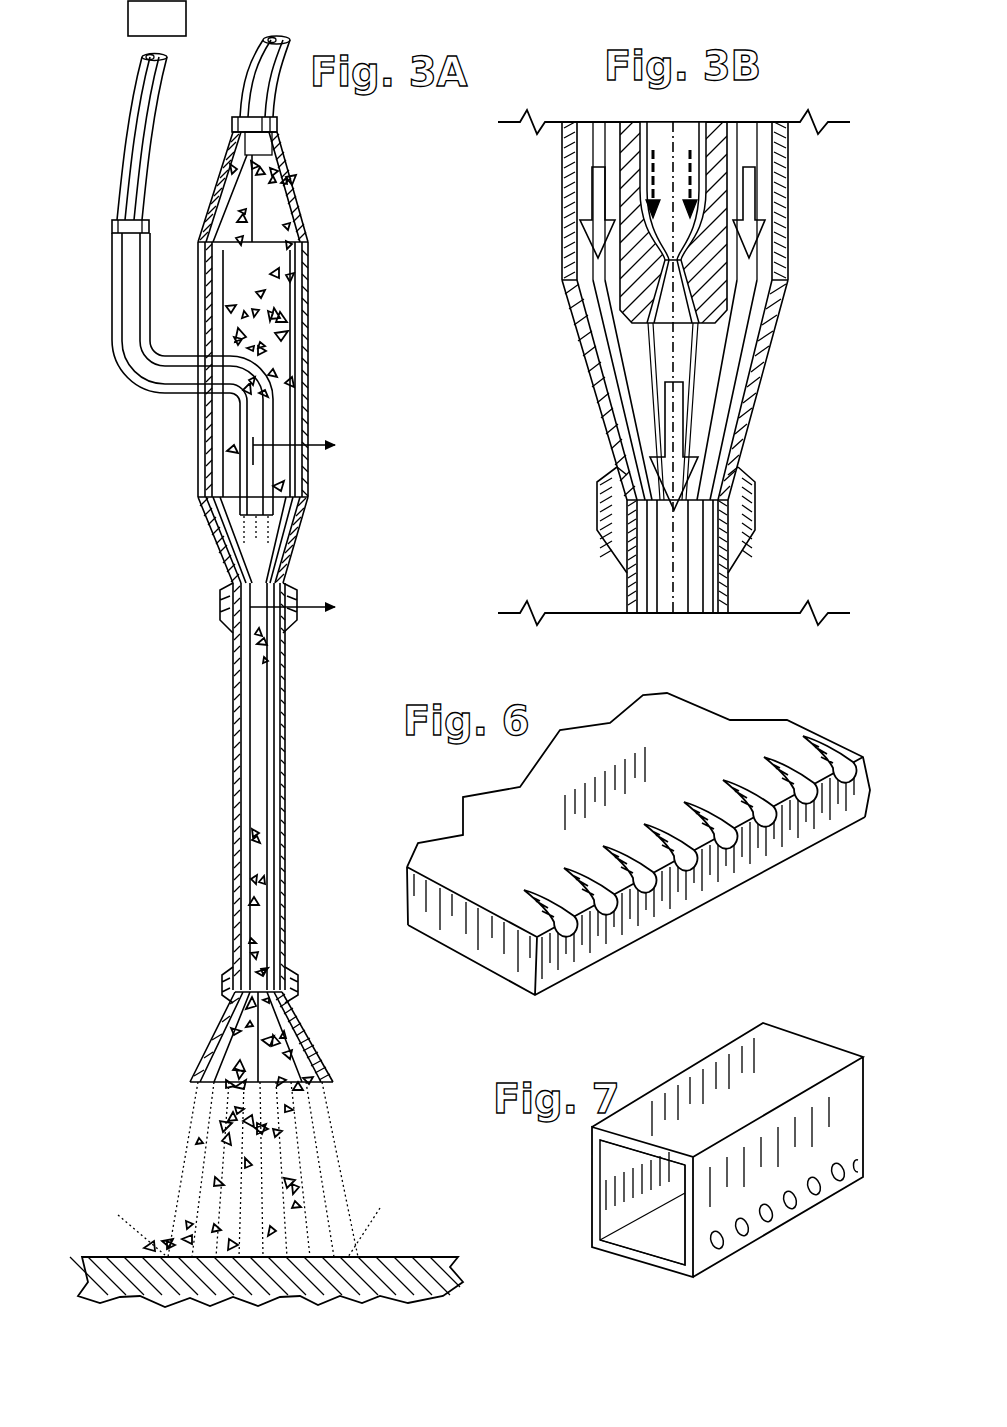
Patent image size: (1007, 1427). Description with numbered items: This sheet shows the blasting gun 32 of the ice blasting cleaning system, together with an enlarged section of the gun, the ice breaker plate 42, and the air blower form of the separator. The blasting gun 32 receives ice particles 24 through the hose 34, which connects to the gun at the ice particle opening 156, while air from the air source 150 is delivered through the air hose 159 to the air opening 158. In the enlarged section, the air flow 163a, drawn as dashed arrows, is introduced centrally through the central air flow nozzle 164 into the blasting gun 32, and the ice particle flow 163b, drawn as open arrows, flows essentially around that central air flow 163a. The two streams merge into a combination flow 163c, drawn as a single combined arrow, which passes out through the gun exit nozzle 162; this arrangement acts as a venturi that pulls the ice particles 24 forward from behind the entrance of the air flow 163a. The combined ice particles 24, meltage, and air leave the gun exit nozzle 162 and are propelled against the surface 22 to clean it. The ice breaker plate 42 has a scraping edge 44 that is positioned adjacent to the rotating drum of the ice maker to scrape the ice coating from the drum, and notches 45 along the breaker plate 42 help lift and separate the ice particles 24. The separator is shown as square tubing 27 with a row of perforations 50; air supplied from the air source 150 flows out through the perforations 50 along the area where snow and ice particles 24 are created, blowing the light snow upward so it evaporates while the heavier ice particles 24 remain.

In FIG. 3A, the air source 150 is at (155, 52).
In FIG. 3A, the hose 34 is at (244, 103).
In FIG. 3A, the air hose 159 is at (122, 165).
In FIG. 3A, the air opening 158 is at (110, 226).
In FIG. 3A, the ice particle opening 156 is at (284, 108).
In FIG. 3A, the blasting gun 32 is at (205, 851).
In FIG. 3B, the blasting gun 32 is at (800, 328).
In FIG. 3A, the gun exit nozzle 162 is at (325, 1050).
In FIG. 3A, the ice particles 24 is at (345, 1207).
In FIG. 3A, the surface 22 is at (445, 1268).
In FIG. 3B, the air flow 163a is at (648, 170).
In FIG. 3B, the ice particle flow 163b is at (757, 210).
In FIG. 3B, the combination flow 163c is at (690, 440).
In FIG. 3B, the central air flow nozzle 164 is at (655, 330).
In FIG. 6, the ice breaker plate 42 is at (712, 768).
In FIG. 6, the scraping edge 44 is at (820, 843).
In FIG. 6, the notches 45 is at (703, 855).
In FIG. 7, the tubing 27 is at (787, 1047).
In FIG. 7, the perforations 50 is at (815, 1195).